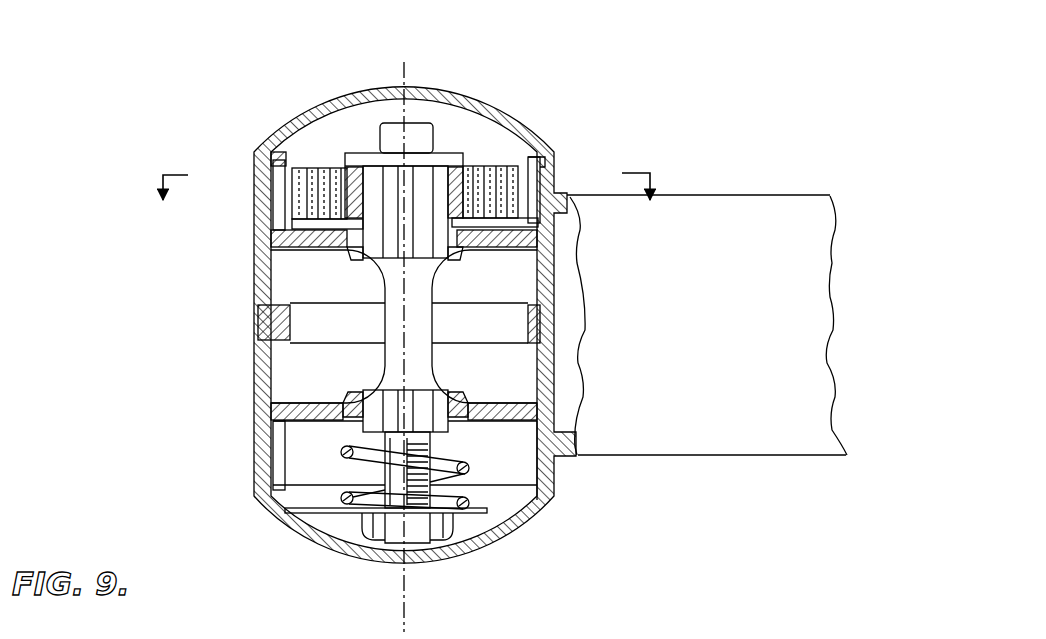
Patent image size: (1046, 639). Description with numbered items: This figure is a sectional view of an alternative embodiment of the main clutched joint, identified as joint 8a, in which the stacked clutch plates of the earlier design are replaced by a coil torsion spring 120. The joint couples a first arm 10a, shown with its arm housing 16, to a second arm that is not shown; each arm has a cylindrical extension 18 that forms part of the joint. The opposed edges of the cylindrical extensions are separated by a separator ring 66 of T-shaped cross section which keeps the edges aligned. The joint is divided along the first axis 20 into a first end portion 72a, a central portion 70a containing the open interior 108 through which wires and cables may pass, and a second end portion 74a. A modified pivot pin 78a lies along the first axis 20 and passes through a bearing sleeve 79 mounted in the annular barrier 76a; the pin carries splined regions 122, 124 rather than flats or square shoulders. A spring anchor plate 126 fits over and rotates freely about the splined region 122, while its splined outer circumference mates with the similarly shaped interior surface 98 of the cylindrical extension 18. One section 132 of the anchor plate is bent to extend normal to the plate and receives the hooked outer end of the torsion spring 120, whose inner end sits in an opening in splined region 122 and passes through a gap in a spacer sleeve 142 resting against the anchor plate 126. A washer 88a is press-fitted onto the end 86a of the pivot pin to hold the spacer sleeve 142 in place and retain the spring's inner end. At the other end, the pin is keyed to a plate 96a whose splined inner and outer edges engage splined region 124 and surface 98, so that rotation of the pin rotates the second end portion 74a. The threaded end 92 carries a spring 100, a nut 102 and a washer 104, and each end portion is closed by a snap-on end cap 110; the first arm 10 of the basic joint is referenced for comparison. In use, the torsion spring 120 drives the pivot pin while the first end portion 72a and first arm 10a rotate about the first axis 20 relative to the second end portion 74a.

The joint 8a is at (566, 54).
The first arm 10 is at (406, 206).
The first arm 10a is at (716, 184).
The arm housing 16 is at (723, 440).
The cylindrical extension 18 is at (556, 165).
The first axis 20 is at (406, 612).
The separator ring 66 is at (325, 307).
The central portion 70a is at (118, 257).
The first end portion 72a is at (118, 93).
The second end portion 74a is at (118, 402).
The annular barrier 76a is at (275, 240).
The pivot pin 78a is at (290, 367).
The bearing sleeve 79 is at (545, 387).
The end of pivot pin 86a is at (394, 152).
The washer 88a is at (358, 166).
The threaded end 92 is at (422, 545).
The plate 96a is at (285, 427).
The interior surface 98 is at (272, 198).
The spring 100 is at (443, 415).
The nut 102 is at (384, 559).
The washer 104 is at (350, 515).
The open interior 108 is at (504, 375).
The end cap 110 is at (421, 88).
The coil torsion spring 120 is at (312, 168).
The splined region 122 is at (443, 222).
The splined region 124 is at (446, 420).
The spring anchor plate 126 is at (492, 250).
The section of anchor plate 132 is at (285, 158).
The spacer sleeve 142 is at (475, 167).